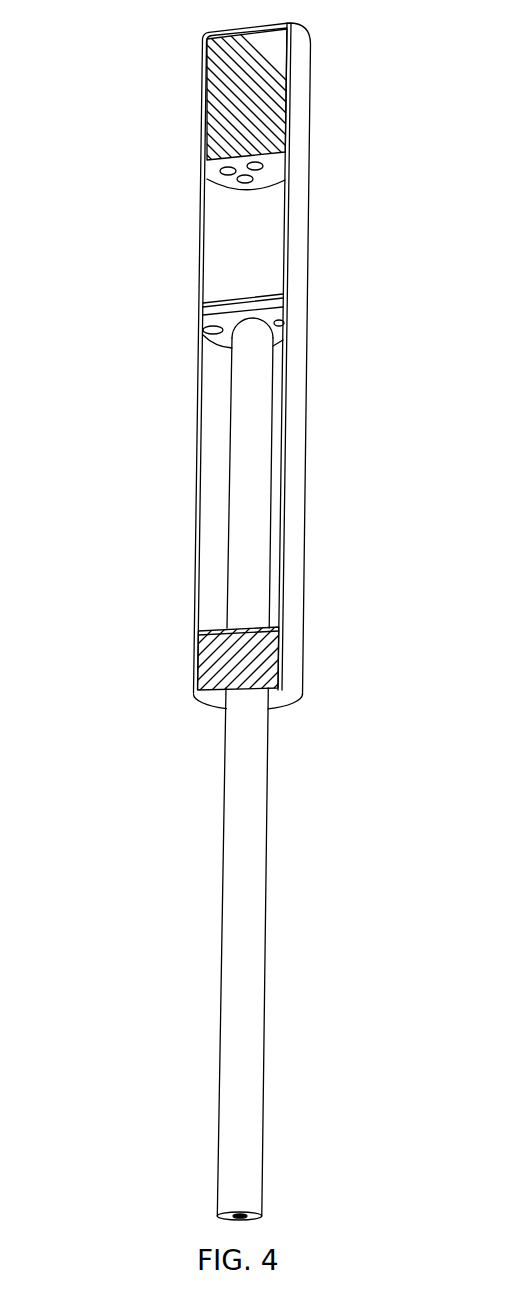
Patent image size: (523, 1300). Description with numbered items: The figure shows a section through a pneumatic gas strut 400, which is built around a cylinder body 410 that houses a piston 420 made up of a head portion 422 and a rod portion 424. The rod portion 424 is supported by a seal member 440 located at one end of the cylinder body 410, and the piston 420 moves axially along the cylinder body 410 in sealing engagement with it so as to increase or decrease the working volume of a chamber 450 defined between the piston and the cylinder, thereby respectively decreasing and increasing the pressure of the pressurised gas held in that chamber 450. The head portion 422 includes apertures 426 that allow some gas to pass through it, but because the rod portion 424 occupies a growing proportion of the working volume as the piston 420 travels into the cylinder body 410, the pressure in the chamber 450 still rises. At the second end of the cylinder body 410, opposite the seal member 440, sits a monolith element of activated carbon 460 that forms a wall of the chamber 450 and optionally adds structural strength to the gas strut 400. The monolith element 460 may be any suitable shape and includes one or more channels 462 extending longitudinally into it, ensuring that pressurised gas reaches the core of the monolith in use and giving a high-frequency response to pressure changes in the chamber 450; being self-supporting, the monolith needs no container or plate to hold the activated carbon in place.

The gas strut 400 is at (113, 218).
The cylinder body 410 is at (305, 503).
The piston 420 is at (163, 349).
The head portion 422 is at (285, 306).
The rod portion 424 is at (220, 945).
The apertures 426 is at (208, 326).
The seal member 440 is at (213, 663).
The chamber 450 is at (268, 265).
The monolith element of activated carbon 460 is at (233, 70).
The channels 462 is at (265, 171).